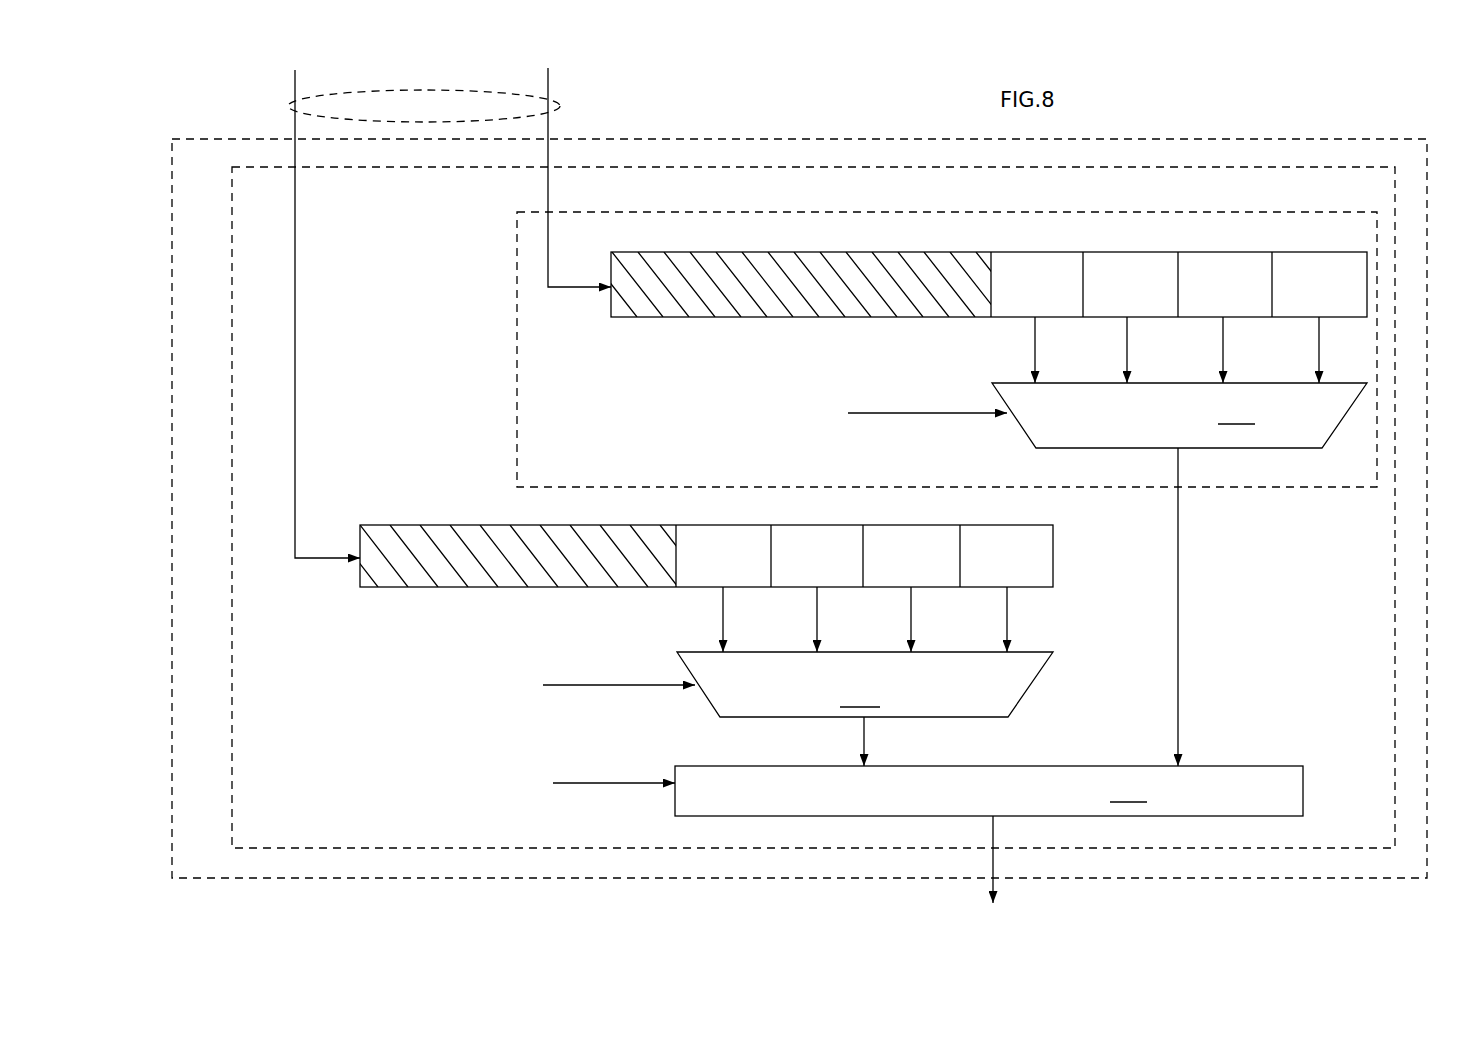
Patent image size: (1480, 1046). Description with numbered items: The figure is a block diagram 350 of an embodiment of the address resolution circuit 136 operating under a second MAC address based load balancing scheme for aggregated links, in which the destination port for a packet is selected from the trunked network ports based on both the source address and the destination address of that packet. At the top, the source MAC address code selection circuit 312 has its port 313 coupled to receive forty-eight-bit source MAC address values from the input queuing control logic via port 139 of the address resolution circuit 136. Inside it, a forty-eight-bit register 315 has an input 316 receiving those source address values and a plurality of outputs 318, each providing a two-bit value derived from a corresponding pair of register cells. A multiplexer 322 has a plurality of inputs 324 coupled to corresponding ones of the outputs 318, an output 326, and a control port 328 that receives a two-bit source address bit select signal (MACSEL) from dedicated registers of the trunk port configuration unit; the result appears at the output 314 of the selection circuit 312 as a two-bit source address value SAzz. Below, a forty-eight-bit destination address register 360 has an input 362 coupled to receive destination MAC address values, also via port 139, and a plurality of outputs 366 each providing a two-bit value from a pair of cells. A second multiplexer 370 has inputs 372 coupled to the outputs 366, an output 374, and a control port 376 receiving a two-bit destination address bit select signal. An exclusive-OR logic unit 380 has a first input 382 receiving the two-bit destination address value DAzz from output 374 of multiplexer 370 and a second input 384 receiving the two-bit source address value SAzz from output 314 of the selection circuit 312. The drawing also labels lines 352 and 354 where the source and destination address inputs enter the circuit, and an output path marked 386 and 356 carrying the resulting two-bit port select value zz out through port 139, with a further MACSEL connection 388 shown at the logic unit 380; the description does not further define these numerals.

The address resolution circuit 136 is at (810, 139).
The port of the address resolution circuit 139 is at (293, 100).
The source MAC address code selection circuit 312 is at (950, 212).
The port 313 is at (548, 213).
The output 314 is at (1177, 490).
The 48-bit register 315 is at (813, 252).
The input 316 is at (611, 294).
The outputs 318 is at (1035, 322).
The multiplexer 322 is at (1179, 415).
The inputs 324 is at (1037, 384).
The output 326 is at (1177, 450).
The control port 328 is at (1008, 416).
The block diagram 350 is at (1408, 121).
The source address input 352 is at (548, 170).
The destination address input 354 is at (295, 170).
The comparison result output 356 is at (993, 850).
The 48-bit destination address register 360 is at (522, 525).
The input 362 is at (360, 566).
The outputs 366 is at (723, 592).
The multiplexer 370 is at (865, 684).
The inputs 372 is at (725, 653).
The output 374 is at (868, 720).
The control port 376 is at (698, 690).
The exclusive-OR logic unit 380 is at (989, 791).
The first input 382 is at (858, 762).
The second input 384 is at (1172, 766).
The XNOR output line 386 is at (993, 820).
The MACSEL select input 388 is at (673, 786).